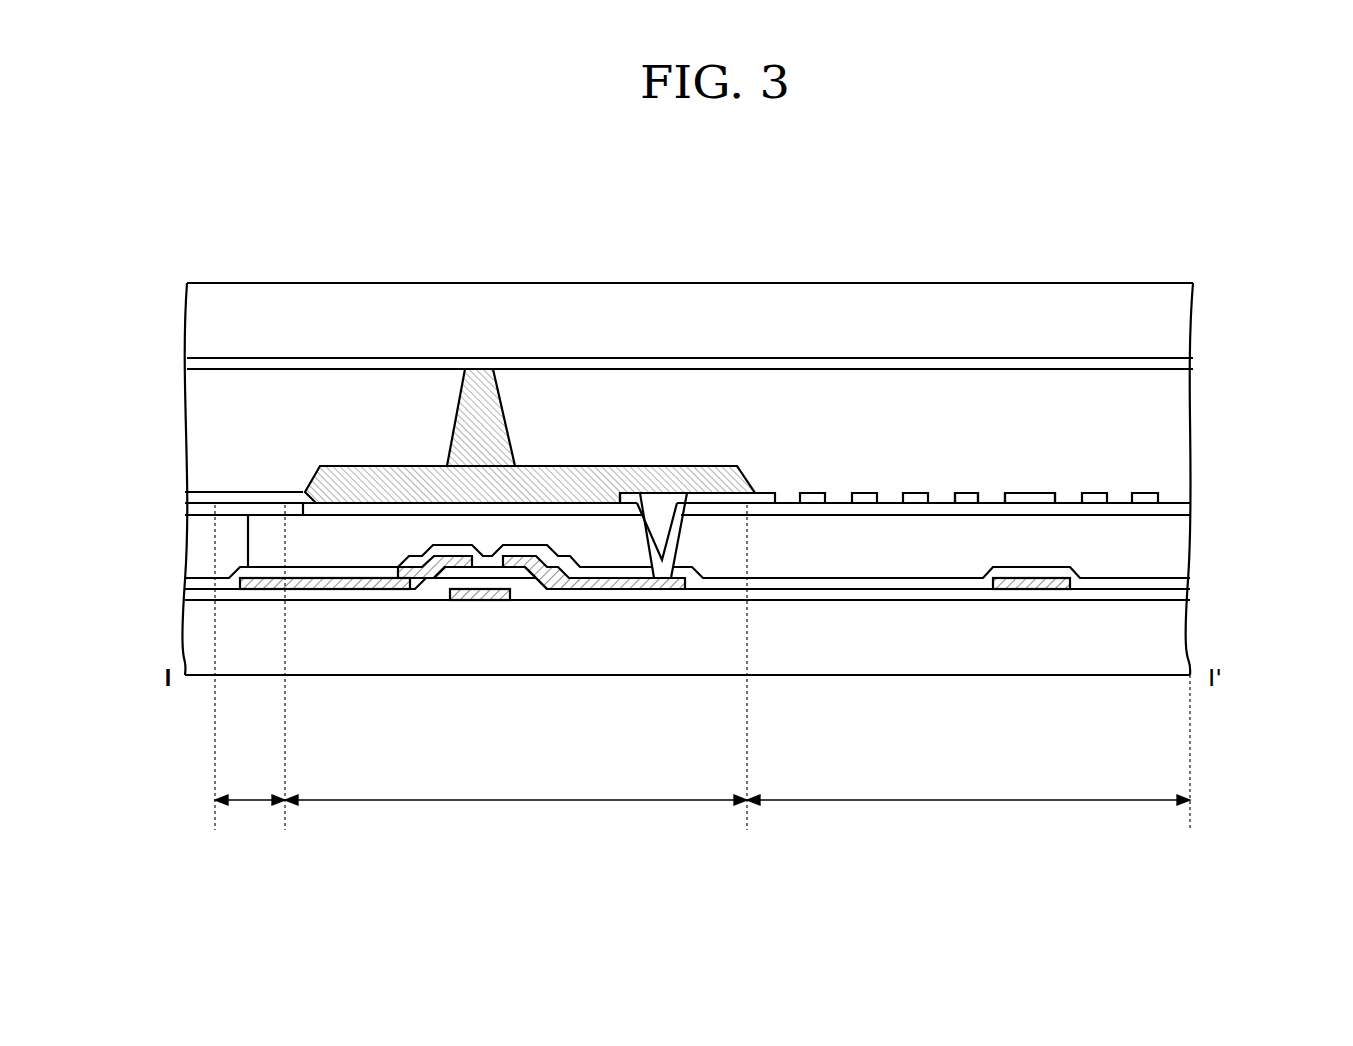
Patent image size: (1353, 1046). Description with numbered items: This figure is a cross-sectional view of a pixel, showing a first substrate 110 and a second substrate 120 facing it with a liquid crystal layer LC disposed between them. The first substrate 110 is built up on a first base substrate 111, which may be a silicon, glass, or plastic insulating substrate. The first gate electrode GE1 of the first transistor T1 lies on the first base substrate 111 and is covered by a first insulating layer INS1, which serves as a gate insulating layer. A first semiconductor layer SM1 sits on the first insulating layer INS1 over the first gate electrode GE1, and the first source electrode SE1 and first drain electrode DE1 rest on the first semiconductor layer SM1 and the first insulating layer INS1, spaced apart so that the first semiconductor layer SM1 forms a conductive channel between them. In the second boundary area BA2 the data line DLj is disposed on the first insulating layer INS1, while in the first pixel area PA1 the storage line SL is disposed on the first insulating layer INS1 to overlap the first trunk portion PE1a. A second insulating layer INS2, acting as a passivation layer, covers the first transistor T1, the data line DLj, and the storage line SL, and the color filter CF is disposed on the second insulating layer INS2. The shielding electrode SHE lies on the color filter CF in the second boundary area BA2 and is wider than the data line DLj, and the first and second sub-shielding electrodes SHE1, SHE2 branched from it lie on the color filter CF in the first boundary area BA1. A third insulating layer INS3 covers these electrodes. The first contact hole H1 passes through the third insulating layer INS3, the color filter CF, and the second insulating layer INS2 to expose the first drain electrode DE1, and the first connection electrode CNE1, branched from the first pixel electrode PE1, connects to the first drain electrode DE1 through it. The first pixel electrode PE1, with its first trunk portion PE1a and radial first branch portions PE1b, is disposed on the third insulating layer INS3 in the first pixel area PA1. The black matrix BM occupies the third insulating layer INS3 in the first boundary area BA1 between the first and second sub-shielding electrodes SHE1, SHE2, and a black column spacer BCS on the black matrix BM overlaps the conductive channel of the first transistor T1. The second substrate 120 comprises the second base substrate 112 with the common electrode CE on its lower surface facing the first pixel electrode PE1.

The second base substrate 112 is at (1172, 314).
The second substrate 120 is at (1277, 303).
The common electrode CE is at (1172, 361).
The liquid crystal layer LC is at (1172, 432).
The black column spacer BCS is at (493, 420).
The black matrix BM is at (361, 466).
The first sub-shielding electrode SHE1 is at (297, 503).
The shielding electrode SHE is at (233, 512).
The second sub-shielding electrode SHE2 is at (193, 508).
The first pixel electrode PE1 is at (1150, 493).
The first trunk portion PE1a is at (1035, 493).
The first branch portions PE1b is at (964, 493).
The third insulating layer INS3 is at (1172, 515).
The first connection electrode CNE1 is at (712, 495).
The first contact hole H1 is at (660, 497).
The color filter CF is at (1172, 548).
The second insulating layer INS2 is at (1178, 583).
The first insulating layer INS1 is at (1178, 598).
The first base substrate 111 is at (1172, 645).
The first substrate 110 is at (1285, 472).
The data line DLj is at (263, 590).
The first transistor T1 is at (541, 669).
The first gate electrode GE1 is at (472, 601).
The first semiconductor layer SM1 is at (508, 578).
The first source electrode SE1 is at (418, 578).
The first drain electrode DE1 is at (594, 649).
The storage line SL is at (1033, 590).
The second boundary area BA2 is at (250, 813).
The first boundary area BA1 is at (516, 813).
The first pixel area PA1 is at (968, 813).